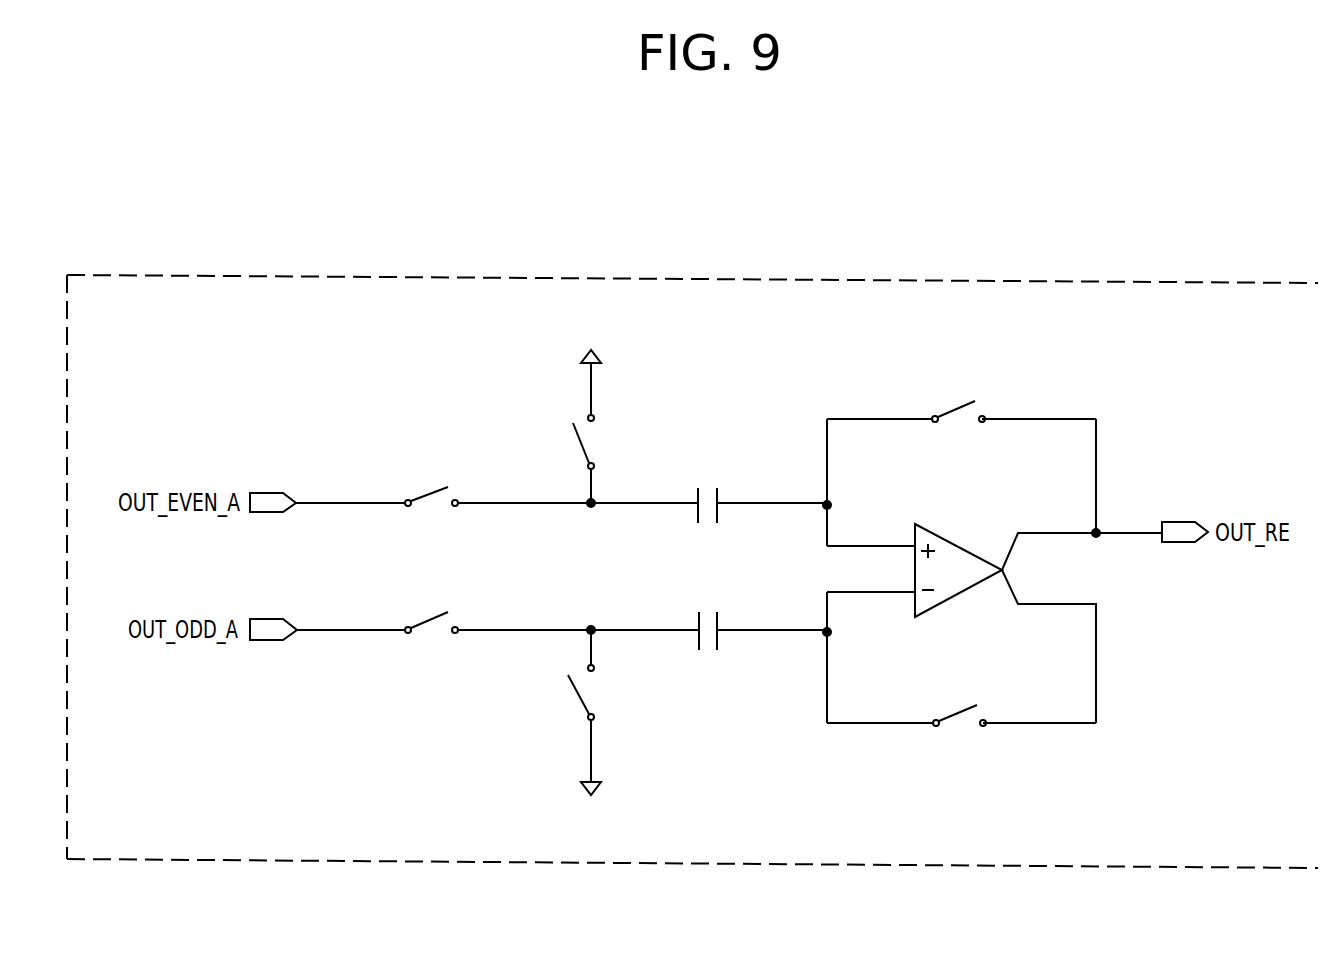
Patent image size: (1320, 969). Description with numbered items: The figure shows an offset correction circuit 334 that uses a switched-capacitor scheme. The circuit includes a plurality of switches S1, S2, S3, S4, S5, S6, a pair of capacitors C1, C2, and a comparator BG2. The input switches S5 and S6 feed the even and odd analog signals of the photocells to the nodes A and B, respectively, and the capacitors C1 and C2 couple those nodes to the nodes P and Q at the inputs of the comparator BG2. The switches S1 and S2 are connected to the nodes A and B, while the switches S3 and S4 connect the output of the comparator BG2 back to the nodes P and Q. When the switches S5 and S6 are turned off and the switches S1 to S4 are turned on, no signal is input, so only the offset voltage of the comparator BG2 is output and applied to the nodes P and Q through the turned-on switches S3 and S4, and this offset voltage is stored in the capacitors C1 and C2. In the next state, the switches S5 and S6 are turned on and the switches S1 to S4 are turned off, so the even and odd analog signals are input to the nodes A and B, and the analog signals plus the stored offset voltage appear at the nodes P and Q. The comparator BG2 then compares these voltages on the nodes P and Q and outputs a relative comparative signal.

The offset correction circuit 334 is at (967, 280).
The switch S1 is at (605, 437).
The switch S2 is at (605, 688).
The switch S3 is at (962, 423).
The switch S4 is at (953, 727).
The switch S5 is at (414, 507).
The switch S6 is at (413, 634).
The capacitor C1 is at (705, 490).
The capacitor C2 is at (706, 616).
The comparator BG2 is at (960, 541).
The node A is at (592, 508).
The node B is at (590, 627).
The node P is at (824, 509).
The node Q is at (825, 629).